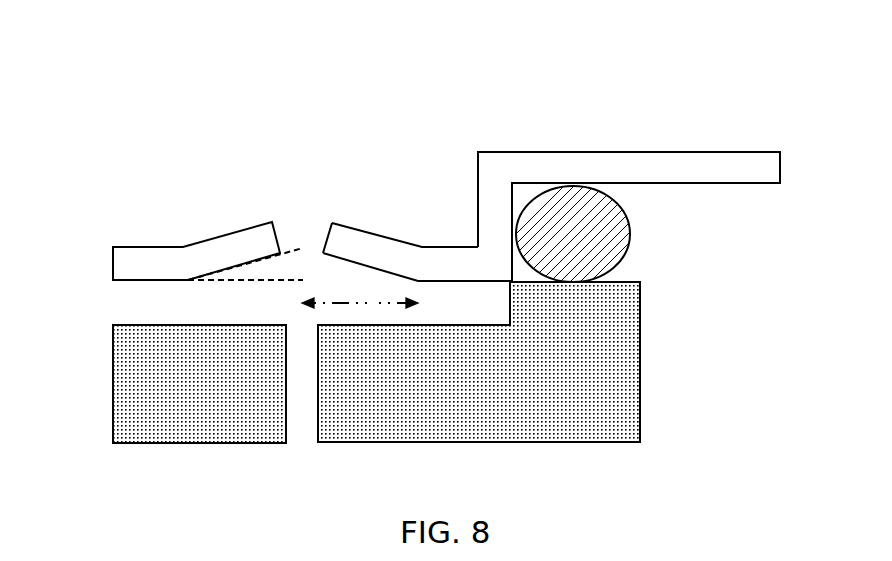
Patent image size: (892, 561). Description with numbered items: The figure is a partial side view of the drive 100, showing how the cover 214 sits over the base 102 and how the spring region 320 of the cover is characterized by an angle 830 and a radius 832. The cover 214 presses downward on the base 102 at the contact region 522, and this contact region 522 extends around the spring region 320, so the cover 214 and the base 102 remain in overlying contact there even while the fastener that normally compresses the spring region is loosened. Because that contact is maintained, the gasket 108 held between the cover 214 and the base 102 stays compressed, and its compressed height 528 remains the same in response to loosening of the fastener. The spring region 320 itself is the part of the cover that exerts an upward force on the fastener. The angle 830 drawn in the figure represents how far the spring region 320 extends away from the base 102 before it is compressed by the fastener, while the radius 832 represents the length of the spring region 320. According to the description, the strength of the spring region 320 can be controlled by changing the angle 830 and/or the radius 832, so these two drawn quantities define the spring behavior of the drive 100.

The drive 100 is at (98, 80).
The base 102 is at (113, 385).
The gasket 108 is at (570, 217).
The cover 214 is at (715, 165).
The spring region 320 is at (282, 184).
The contact region 522 is at (185, 207).
The compressed height 528 is at (803, 185).
The angle 830 is at (230, 281).
The radius 832 is at (353, 303).